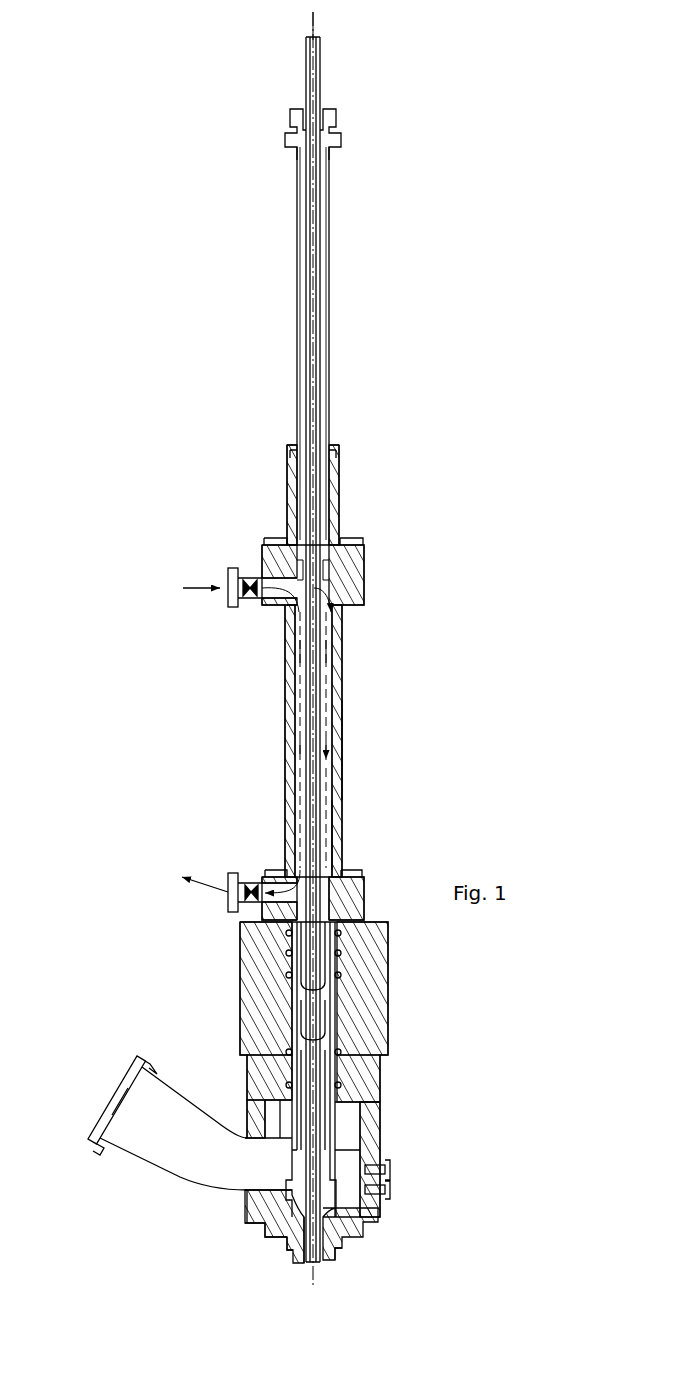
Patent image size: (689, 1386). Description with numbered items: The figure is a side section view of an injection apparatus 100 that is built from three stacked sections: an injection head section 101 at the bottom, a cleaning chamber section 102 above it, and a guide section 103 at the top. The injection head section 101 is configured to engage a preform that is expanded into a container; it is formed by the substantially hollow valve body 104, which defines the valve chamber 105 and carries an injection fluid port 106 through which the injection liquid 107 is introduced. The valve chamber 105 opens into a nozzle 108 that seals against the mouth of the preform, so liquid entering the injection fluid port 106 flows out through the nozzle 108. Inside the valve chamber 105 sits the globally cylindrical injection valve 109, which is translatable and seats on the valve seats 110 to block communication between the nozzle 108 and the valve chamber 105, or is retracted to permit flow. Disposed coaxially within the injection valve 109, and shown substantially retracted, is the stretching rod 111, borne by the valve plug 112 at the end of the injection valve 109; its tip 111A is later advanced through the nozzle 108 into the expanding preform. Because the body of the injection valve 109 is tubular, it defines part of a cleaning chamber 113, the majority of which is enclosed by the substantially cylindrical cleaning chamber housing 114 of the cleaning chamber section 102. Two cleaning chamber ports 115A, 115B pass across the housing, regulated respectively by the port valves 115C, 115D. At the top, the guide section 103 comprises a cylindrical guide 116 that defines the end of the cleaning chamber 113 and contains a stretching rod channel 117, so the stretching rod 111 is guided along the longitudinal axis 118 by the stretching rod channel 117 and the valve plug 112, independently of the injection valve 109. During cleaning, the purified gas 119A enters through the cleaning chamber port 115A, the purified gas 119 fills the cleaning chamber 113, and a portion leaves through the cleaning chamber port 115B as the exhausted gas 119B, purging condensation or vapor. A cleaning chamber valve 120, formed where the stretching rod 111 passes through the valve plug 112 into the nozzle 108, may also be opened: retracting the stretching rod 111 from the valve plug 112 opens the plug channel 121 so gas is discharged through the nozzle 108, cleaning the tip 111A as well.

The injection apparatus 100 is at (408, 800).
The injection head section 101 is at (417, 1152).
The cleaning chamber section 102 is at (349, 622).
The guide section 103 is at (345, 300).
The valve body 104 is at (368, 1105).
The valve chamber 105 is at (268, 1108).
The injection fluid port 106 is at (115, 1102).
The injection liquid 107 is at (115, 1095).
The nozzle 108 is at (320, 1262).
The injection valve 109 is at (345, 1128).
The valve seats 110 is at (250, 1215).
The stretching rod 111 is at (318, 80).
The tip 111A is at (292, 1243).
The valve plug 112 is at (378, 1197).
The cleaning chamber 113 is at (333, 826).
The cleaning chamber housing 114 is at (342, 748).
The cleaning chamber port 115A is at (227, 598).
The cleaning chamber port 115B is at (225, 902).
The port valve 115C is at (250, 604).
The port valve 115D is at (252, 877).
The guide 116 is at (329, 243).
The stretching rod channel 117 is at (320, 383).
The longitudinal axis 118 is at (310, 14).
The purified gas 119 is at (330, 718).
The purified gas 119A is at (200, 578).
The exhausted gas 119B is at (194, 877).
The cleaning chamber valve 120 is at (310, 1242).
The plug channel 121 is at (335, 1255).